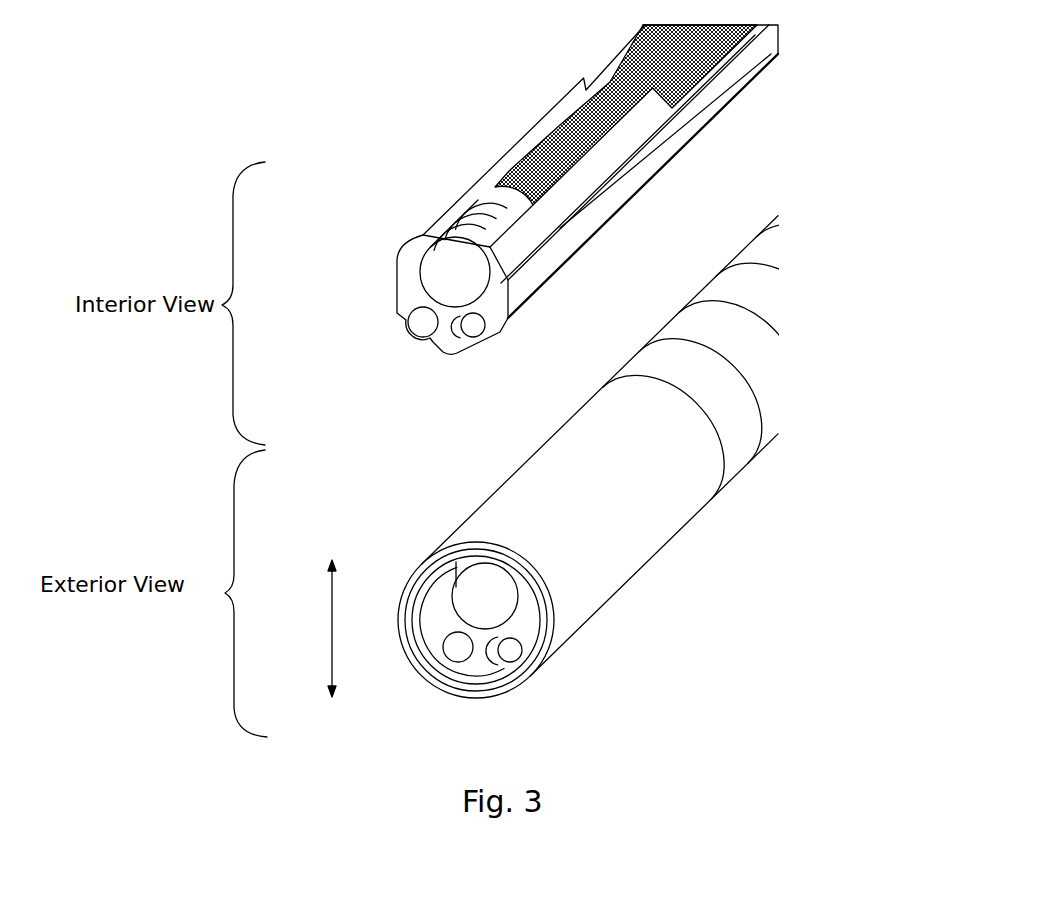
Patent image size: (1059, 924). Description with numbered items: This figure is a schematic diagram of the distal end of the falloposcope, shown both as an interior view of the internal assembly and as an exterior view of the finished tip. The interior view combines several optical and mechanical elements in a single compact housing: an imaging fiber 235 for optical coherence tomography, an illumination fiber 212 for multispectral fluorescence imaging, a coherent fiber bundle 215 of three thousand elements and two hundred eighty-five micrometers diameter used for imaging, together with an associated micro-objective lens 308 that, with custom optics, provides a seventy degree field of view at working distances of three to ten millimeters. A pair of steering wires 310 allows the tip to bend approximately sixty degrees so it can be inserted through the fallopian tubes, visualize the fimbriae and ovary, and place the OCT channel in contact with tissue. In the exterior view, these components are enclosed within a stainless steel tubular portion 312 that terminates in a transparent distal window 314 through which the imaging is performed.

The coherent fiber bundle 215 is at (498, 173).
The micro-objective lens 308 is at (435, 228).
The steering wires 310 is at (378, 275).
The illumination fiber 212 is at (391, 333).
The imaging fiber 235 is at (459, 340).
The tubular portion 312 is at (502, 508).
The transparent distal window 314 is at (425, 576).